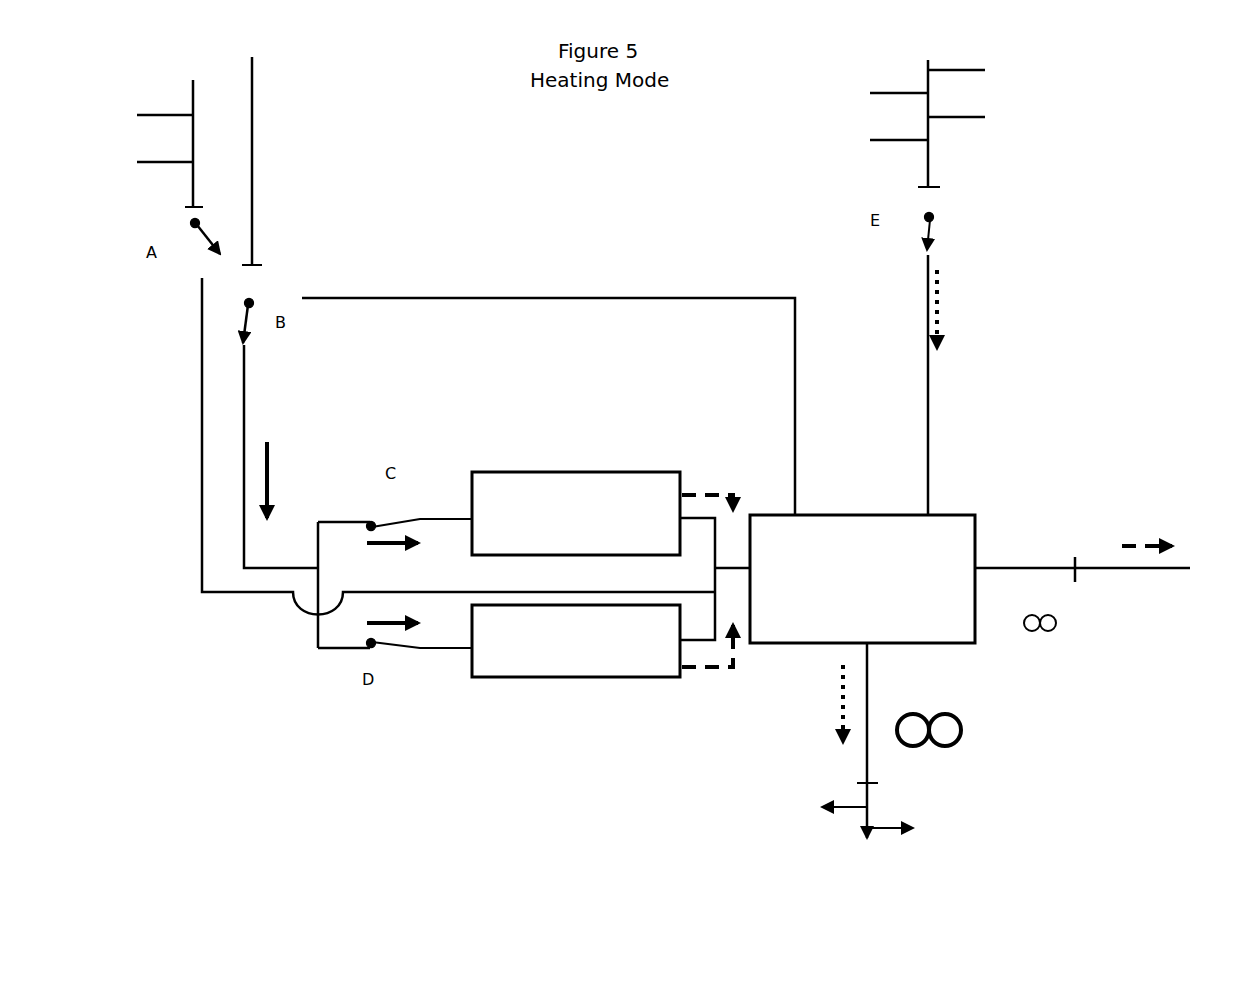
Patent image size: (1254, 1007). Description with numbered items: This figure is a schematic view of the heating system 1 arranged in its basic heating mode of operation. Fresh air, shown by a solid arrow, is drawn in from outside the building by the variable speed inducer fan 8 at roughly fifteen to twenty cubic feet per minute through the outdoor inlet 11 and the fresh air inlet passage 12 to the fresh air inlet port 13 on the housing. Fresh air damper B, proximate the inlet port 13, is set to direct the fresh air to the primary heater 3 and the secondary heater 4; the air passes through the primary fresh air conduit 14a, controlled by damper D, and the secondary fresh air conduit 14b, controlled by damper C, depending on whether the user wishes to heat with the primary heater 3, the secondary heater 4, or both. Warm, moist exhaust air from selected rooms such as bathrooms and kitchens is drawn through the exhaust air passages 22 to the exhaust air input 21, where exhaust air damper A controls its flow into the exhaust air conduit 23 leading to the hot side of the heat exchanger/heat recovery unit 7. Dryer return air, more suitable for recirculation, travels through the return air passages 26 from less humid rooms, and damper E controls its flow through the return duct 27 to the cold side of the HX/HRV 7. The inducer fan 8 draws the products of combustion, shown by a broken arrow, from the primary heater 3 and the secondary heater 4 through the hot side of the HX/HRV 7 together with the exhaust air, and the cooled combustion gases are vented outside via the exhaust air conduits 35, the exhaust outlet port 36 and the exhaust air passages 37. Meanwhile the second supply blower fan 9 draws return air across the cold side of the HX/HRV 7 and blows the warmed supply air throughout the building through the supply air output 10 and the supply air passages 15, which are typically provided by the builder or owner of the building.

The heating system 1 is at (1080, 145).
The primary heater 3 is at (576, 641).
The secondary heater 4 is at (576, 513).
The heat exchanger/heat recovery unit (HX/HRV) 7 is at (862, 579).
The first variable speed inducer fan 8 is at (1040, 644).
The second supply blower fan 9 is at (686, 785).
The supply air output 10 is at (868, 645).
The outdoor inlet 11 is at (253, 58).
The fresh air inlet passage 12 is at (252, 118).
The fresh air inlet port 13 is at (256, 263).
The primary fresh air conduit 14a is at (450, 650).
The secondary fresh air conduit 14b is at (447, 518).
The supply air passages 15 is at (850, 835).
The exhaust air input 21 is at (193, 205).
The exhaust air passages 22 is at (182, 96).
The exhaust air conduit 23 is at (197, 582).
The return air passages 26 is at (902, 108).
The return duct 27 is at (927, 513).
The exhaust air conduits 35 is at (982, 558).
The exhaust outlet port 36 is at (1075, 557).
The exhaust air passages 37 is at (1122, 568).